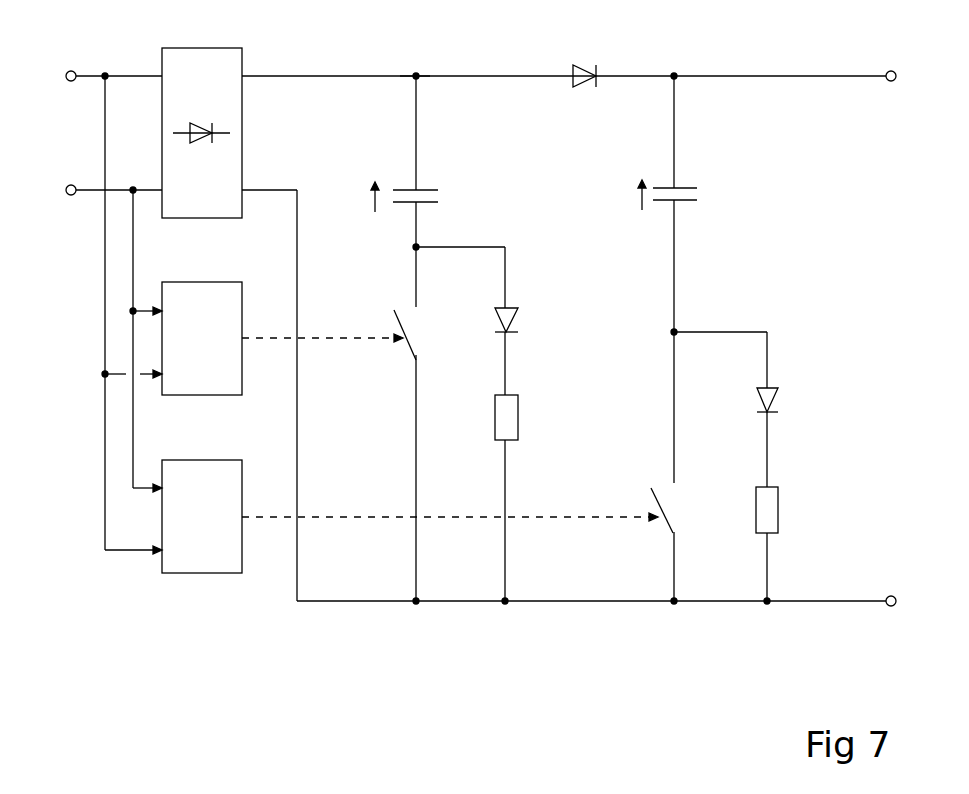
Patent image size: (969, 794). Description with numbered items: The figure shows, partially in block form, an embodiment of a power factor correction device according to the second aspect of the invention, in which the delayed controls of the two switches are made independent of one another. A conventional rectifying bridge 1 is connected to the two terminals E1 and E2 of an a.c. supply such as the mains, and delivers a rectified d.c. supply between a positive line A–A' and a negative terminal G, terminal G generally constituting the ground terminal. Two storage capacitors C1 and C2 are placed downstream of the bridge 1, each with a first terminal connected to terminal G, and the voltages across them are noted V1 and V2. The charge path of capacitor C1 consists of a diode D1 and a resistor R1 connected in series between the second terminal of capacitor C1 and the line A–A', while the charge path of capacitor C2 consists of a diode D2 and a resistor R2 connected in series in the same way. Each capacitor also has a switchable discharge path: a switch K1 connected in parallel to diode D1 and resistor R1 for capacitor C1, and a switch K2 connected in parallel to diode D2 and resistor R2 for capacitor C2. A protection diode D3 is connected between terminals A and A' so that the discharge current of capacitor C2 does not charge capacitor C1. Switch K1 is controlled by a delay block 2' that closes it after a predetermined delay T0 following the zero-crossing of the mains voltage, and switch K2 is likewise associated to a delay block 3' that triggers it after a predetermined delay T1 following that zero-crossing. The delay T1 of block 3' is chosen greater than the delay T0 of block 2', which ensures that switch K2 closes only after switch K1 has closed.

The rectifying bridge 1 is at (242, 63).
The delay block 2' is at (193, 363).
The delay block 3' is at (191, 547).
The a.c. supply terminal E1 is at (70, 60).
The a.c. supply terminal E2 is at (70, 211).
The positive supply line terminal A is at (383, 40).
The positive output terminal A' is at (861, 52).
The negative output terminal G is at (886, 609).
The delay T0 is at (294, 340).
The delay T1 is at (422, 519).
The storage capacitor C1 is at (434, 161).
The storage capacitor C2 is at (694, 204).
The voltage across capacitor C1 V1 is at (358, 197).
The voltage across capacitor C2 V2 is at (624, 195).
The switch K1 is at (420, 422).
The switch K2 is at (677, 465).
The diode D1 is at (487, 321).
The diode D2 is at (746, 409).
The protection diode D3 is at (588, 60).
The resistor R1 is at (525, 498).
The resistor R2 is at (785, 544).